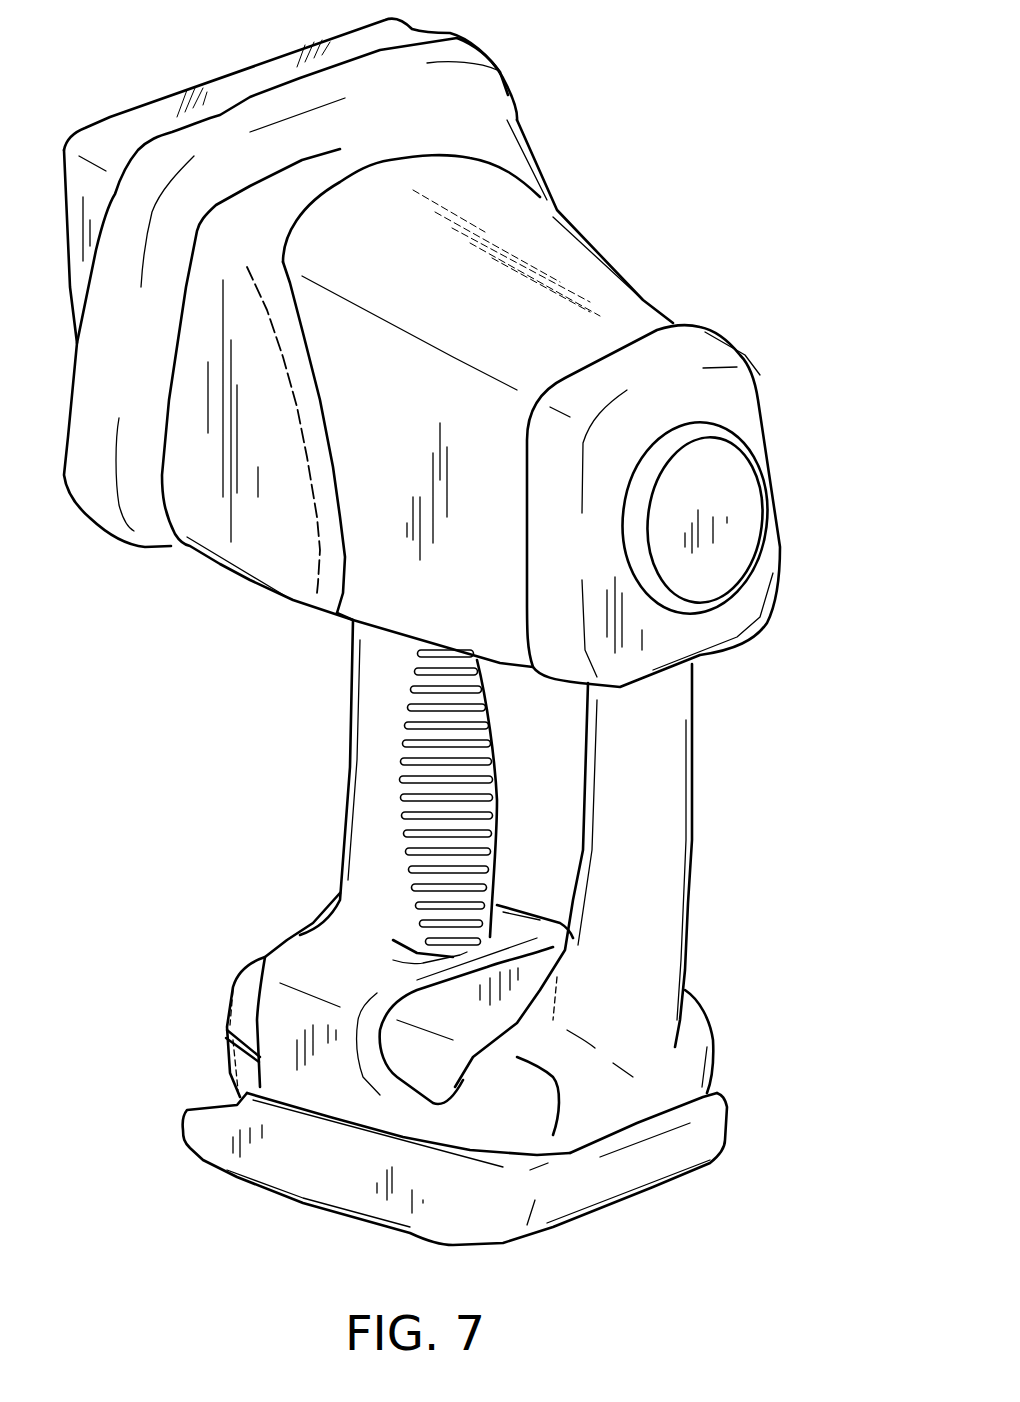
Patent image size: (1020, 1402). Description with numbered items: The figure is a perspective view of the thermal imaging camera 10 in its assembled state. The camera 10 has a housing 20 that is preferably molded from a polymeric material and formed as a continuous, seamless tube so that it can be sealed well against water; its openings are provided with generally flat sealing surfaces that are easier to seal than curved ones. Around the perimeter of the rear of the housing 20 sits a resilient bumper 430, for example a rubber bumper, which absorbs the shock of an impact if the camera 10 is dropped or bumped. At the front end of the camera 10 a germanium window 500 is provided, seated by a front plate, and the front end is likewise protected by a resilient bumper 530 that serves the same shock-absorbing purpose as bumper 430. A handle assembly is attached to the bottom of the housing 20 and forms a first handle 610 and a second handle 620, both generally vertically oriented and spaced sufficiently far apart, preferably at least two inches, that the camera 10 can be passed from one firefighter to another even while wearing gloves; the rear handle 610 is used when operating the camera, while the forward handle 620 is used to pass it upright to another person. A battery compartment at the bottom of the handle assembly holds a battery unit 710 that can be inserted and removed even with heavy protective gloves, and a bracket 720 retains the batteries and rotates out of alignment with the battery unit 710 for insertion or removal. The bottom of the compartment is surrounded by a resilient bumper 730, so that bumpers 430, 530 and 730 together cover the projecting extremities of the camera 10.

The thermal imaging camera 10 is at (653, 136).
The housing 20 is at (604, 257).
The resilient bumper 430 is at (457, 42).
The germanium window 500 is at (750, 505).
The resilient bumper 530 is at (720, 337).
The first handle 610 is at (380, 757).
The second handle 620 is at (657, 862).
The battery unit 710 is at (253, 960).
The bracket 720 is at (227, 1030).
The resilient bumper 730 is at (290, 1163).